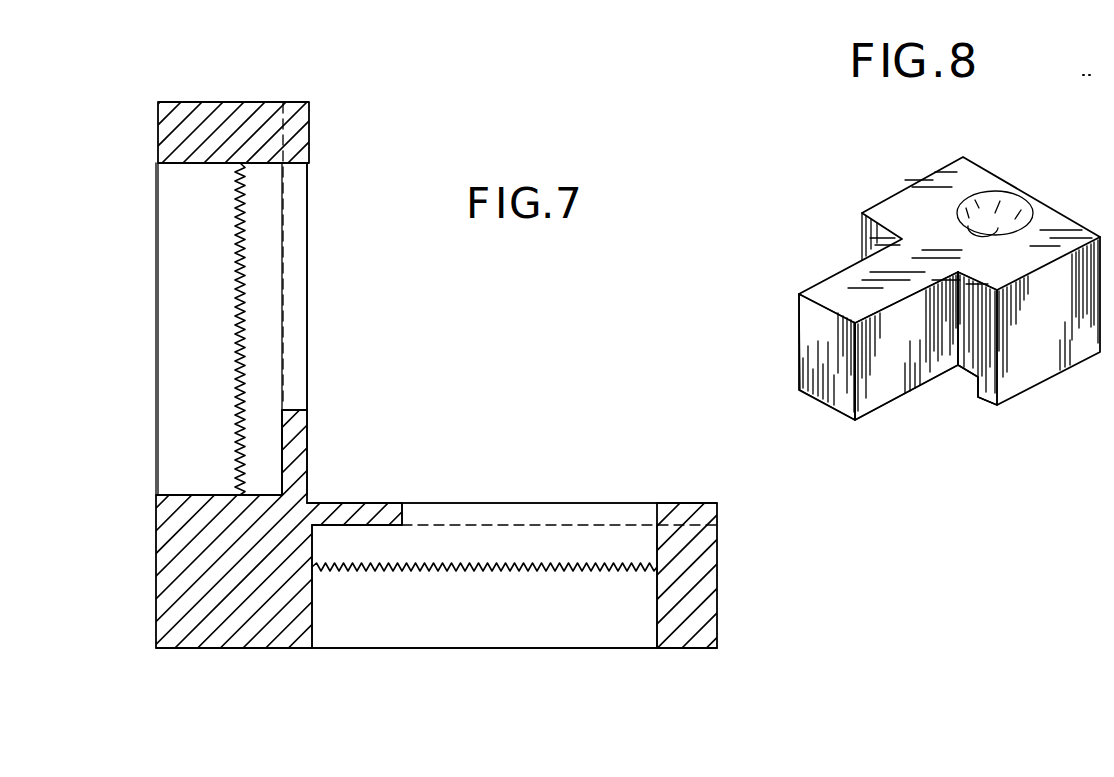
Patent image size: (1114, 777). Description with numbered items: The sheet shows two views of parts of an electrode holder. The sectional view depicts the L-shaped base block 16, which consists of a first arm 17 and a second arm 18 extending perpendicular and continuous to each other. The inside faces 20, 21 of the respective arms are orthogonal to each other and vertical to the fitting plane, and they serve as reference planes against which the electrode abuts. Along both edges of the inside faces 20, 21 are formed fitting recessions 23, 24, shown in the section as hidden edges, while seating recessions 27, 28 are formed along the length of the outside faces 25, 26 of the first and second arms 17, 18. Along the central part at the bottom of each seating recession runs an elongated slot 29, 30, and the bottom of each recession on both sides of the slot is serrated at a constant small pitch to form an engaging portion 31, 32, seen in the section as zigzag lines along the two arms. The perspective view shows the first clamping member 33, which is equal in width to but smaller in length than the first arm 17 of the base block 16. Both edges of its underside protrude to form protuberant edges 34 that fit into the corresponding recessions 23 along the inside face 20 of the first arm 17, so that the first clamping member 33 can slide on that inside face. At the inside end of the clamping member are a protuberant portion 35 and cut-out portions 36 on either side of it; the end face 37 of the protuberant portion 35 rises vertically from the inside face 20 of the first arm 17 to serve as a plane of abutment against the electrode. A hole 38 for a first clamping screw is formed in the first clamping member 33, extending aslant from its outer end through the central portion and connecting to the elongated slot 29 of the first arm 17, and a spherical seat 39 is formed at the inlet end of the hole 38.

In FIG. 7, the base block 16 is at (405, 388).
In FIG. 7, the first arm 17 is at (670, 641).
In FIG. 7, the second arm 18 is at (182, 141).
In FIG. 7, the inside face 20 is at (389, 501).
In FIG. 7, the inside face 21 is at (313, 432).
In FIG. 7, the fitting recession 23 is at (487, 518).
In FIG. 7, the fitting recession 24 is at (290, 256).
In FIG. 7, the outside face 25 is at (380, 651).
In FIG. 7, the outside face 26 is at (152, 406).
In FIG. 7, the seating recession 27 is at (447, 620).
In FIG. 7, the seating recession 28 is at (182, 234).
In FIG. 7, the elongated slot 29 is at (580, 518).
In FIG. 7, the elongated slot 30 is at (296, 192).
In FIG. 7, the engaging portion 31 is at (527, 574).
In FIG. 7, the engaging portion 32 is at (236, 352).
In FIG. 8, the first clamping member 33 is at (1058, 200).
In FIG. 8, the protuberant edge 34 is at (982, 408).
In FIG. 8, the protuberant portion 35 is at (908, 372).
In FIG. 8, the cut-out portion 36 is at (866, 232).
In FIG. 8, the end face 37 is at (838, 397).
In FIG. 8, the hole 38 is at (985, 222).
In FIG. 8, the spherical seat 39 is at (1013, 208).